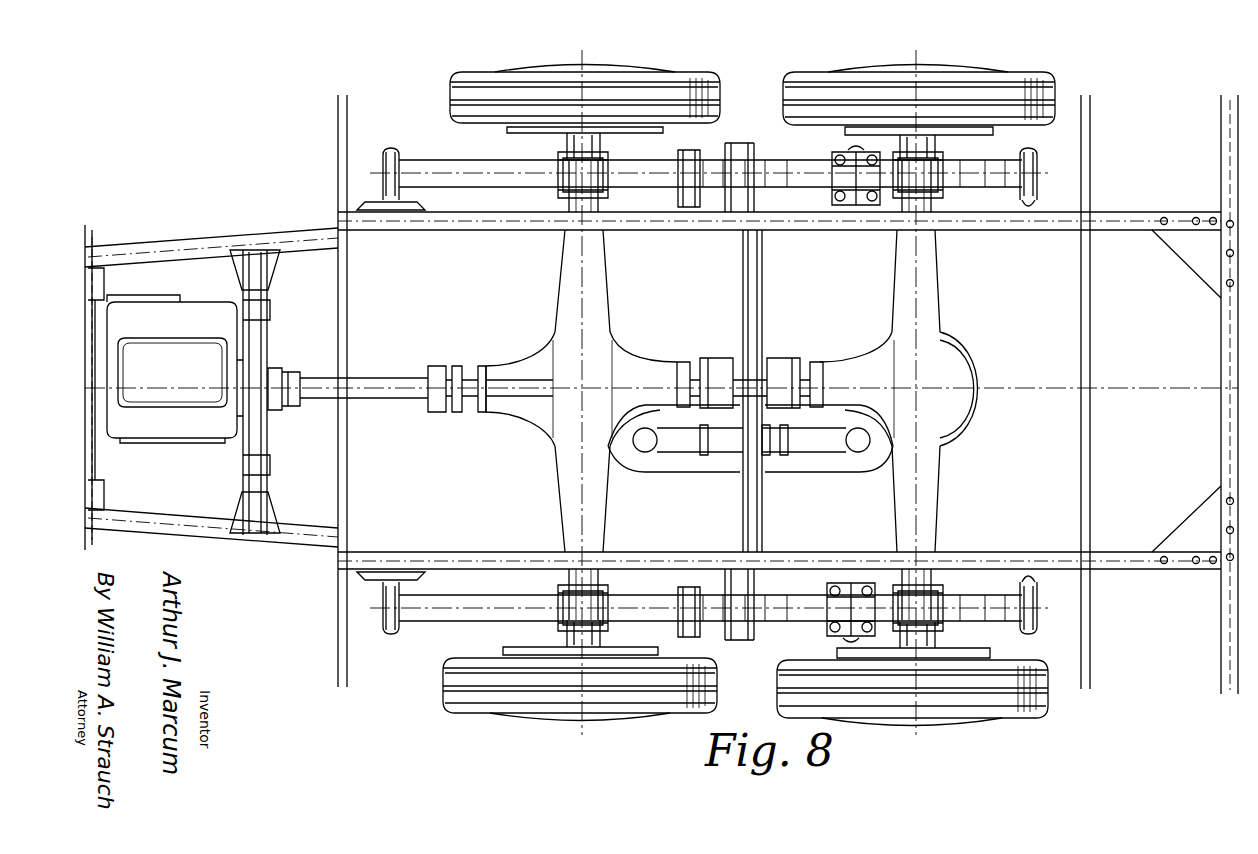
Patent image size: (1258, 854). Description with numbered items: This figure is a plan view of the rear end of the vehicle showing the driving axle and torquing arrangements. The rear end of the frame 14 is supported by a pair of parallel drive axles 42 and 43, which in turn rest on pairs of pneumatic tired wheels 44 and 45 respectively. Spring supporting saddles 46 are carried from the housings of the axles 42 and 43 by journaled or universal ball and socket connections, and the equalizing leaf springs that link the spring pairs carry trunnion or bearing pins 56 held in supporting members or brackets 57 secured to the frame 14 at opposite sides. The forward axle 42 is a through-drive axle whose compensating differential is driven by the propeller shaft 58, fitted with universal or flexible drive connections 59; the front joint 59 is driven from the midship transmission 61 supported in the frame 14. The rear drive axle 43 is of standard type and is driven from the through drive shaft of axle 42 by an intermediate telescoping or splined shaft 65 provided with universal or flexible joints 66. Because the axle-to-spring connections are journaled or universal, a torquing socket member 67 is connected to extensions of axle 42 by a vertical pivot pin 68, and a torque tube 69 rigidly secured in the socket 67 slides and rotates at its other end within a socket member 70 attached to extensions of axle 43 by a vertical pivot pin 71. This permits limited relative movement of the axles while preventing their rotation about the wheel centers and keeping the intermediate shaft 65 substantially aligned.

The frame 14 is at (1085, 212).
The drive axle 42 is at (562, 300).
The rear drive axle 43 is at (893, 298).
The pneumatic tired wheels 44 is at (448, 72).
The pneumatic tired wheels 45 is at (806, 72).
The spring supporting saddles 46 is at (558, 160).
The trunnion or bearing pins 56 is at (846, 152).
The supporting members or brackets 57 is at (835, 222).
The propeller shaft 58 is at (362, 378).
The universal or flexible drive connections 59 is at (292, 368).
The midship transmission 61 is at (185, 300).
The intermediate telescoping or splined shaft 65 is at (762, 362).
The universal or flexible joints 66 is at (712, 358).
The torquing socket member 67 is at (668, 460).
The vertical pivot pin 68 is at (642, 455).
The torque tube 69 is at (770, 460).
The socket member 70 is at (805, 460).
The vertical pivot pin 71 is at (858, 455).